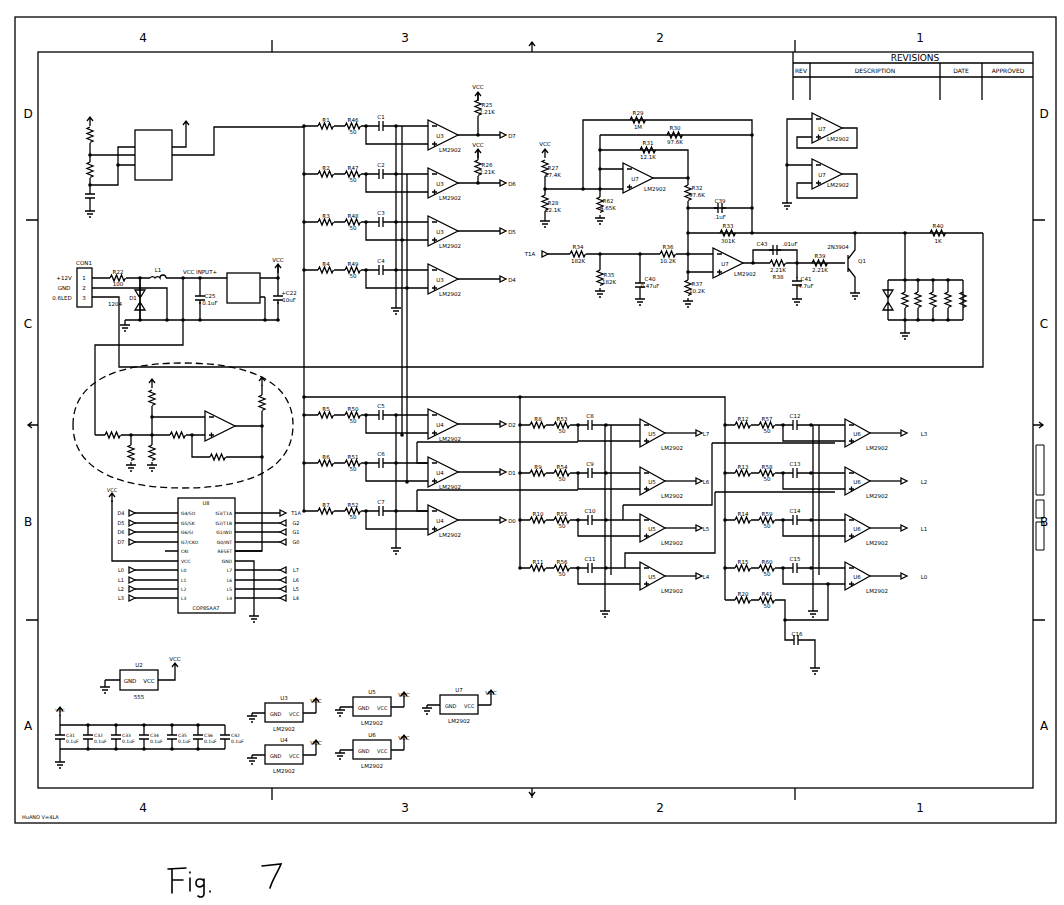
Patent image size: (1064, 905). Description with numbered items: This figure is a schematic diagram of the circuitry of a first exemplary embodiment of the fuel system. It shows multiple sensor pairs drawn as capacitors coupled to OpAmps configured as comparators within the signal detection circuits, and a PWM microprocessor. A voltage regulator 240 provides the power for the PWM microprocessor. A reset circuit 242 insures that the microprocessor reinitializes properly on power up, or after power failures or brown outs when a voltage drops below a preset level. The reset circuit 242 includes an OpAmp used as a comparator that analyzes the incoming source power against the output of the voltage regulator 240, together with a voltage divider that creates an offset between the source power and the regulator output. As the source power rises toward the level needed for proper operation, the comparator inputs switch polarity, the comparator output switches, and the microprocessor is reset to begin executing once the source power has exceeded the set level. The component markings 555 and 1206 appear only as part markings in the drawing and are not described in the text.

The voltage regulator 240 is at (236, 266).
The reset circuit 242 is at (243, 363).
The timer 555 is at (194, 163).
The resistor network 1206 is at (919, 286).